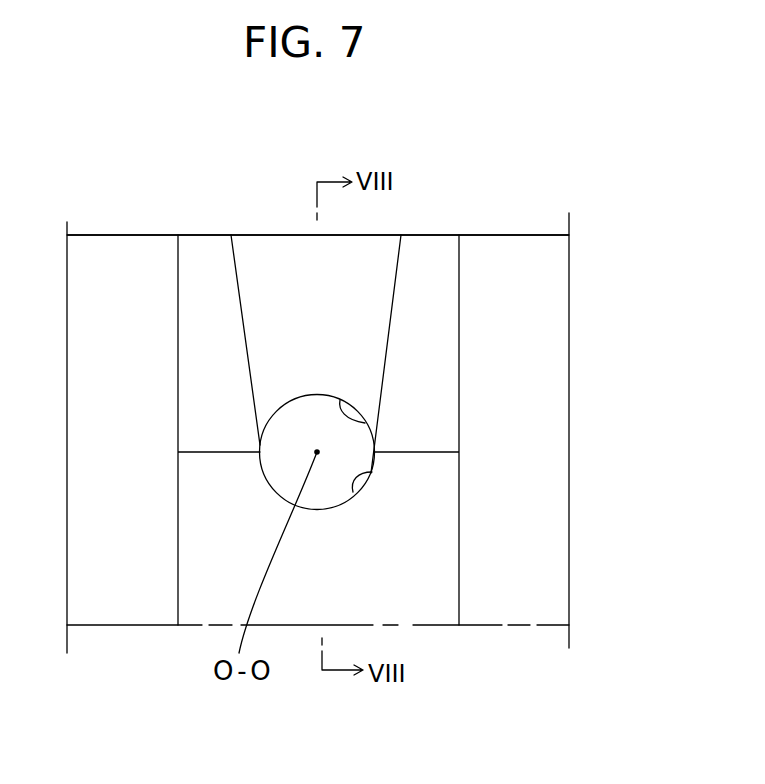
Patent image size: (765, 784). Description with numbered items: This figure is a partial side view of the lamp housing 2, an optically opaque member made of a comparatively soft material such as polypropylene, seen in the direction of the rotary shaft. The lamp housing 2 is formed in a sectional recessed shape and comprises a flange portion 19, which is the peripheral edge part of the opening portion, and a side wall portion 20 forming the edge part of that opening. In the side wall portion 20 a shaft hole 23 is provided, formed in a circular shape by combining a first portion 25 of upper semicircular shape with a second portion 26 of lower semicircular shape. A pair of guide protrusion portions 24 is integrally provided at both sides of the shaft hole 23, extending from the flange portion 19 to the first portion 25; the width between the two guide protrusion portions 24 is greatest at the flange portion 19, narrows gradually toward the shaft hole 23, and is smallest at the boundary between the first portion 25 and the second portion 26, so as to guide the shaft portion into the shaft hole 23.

The lamp housing 2 is at (97, 215).
The flange portion 19 is at (292, 235).
The side wall portion 20 is at (133, 262).
The shaft hole 23 is at (637, 392).
The guide protrusion portion 24 is at (200, 255).
The first portion 25 is at (365, 423).
The second portion 26 is at (372, 472).